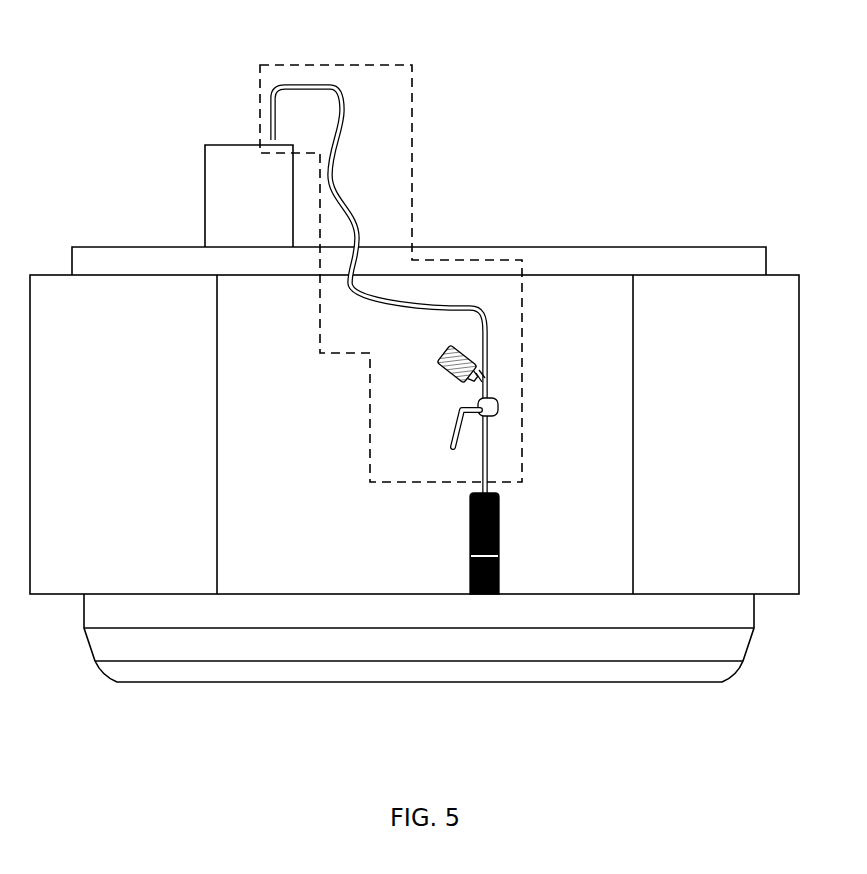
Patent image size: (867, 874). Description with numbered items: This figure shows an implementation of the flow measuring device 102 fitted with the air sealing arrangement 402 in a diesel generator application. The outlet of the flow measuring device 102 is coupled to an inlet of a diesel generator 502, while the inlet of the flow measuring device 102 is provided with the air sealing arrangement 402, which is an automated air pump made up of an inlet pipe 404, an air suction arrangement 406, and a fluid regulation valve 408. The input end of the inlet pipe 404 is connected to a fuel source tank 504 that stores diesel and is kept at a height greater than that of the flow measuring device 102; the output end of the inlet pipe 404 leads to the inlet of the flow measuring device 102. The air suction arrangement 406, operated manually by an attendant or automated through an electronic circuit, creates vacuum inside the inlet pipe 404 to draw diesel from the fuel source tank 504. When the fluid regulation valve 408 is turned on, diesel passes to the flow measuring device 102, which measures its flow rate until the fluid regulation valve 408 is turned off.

The flow measuring device 102 is at (470, 538).
The air sealing arrangement 402 is at (333, 65).
The inlet pipe 404 is at (333, 154).
The air suction arrangement 406 is at (441, 356).
The fluid regulation valve 408 is at (455, 426).
The diesel generator 502 is at (485, 247).
The fuel source tank 504 is at (205, 211).